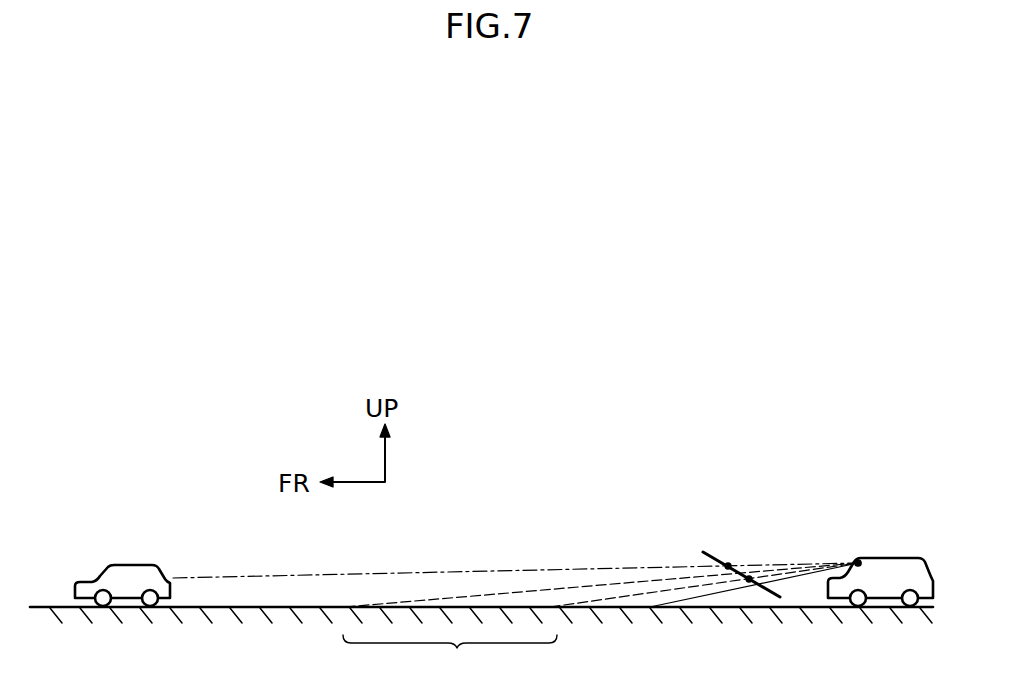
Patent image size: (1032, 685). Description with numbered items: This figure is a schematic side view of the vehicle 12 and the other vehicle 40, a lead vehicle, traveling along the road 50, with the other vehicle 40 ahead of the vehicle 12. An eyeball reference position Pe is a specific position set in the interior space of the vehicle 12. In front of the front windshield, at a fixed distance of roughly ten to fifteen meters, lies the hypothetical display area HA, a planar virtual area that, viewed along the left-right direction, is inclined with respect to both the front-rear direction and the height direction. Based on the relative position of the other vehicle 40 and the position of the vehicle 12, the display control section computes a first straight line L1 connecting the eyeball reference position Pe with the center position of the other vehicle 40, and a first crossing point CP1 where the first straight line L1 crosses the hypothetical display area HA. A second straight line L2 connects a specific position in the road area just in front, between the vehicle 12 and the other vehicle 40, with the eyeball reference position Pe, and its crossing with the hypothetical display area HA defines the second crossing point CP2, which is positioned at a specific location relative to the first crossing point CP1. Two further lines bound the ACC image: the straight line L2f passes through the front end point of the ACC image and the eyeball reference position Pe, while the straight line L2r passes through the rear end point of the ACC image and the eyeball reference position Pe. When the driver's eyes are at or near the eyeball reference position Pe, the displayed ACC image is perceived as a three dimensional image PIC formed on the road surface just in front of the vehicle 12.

The road 50 is at (65, 606).
The other vehicle 40 is at (135, 572).
The vehicle 12 is at (908, 558).
The first straight line L1 is at (386, 572).
The straight line passing through the front end point L2f is at (636, 582).
The second straight line L2 is at (697, 587).
The straight line passing through the rear end point L2r is at (798, 577).
The hypothetical display area HA is at (717, 554).
The first crossing point CP1 is at (734, 564).
The second crossing point CP2 is at (750, 582).
The eyeball reference position Pe is at (858, 561).
The three dimensional image PIC is at (450, 659).